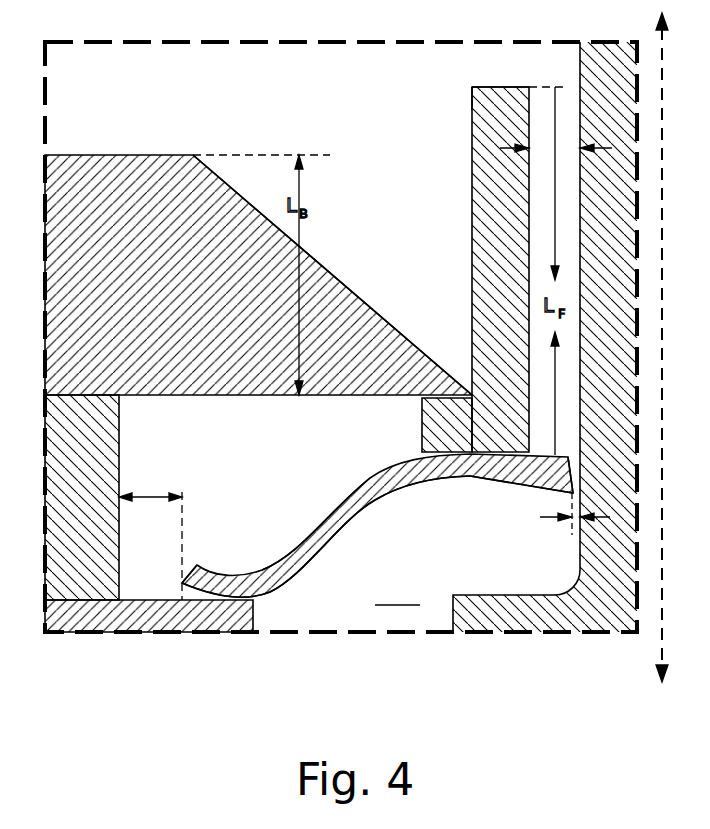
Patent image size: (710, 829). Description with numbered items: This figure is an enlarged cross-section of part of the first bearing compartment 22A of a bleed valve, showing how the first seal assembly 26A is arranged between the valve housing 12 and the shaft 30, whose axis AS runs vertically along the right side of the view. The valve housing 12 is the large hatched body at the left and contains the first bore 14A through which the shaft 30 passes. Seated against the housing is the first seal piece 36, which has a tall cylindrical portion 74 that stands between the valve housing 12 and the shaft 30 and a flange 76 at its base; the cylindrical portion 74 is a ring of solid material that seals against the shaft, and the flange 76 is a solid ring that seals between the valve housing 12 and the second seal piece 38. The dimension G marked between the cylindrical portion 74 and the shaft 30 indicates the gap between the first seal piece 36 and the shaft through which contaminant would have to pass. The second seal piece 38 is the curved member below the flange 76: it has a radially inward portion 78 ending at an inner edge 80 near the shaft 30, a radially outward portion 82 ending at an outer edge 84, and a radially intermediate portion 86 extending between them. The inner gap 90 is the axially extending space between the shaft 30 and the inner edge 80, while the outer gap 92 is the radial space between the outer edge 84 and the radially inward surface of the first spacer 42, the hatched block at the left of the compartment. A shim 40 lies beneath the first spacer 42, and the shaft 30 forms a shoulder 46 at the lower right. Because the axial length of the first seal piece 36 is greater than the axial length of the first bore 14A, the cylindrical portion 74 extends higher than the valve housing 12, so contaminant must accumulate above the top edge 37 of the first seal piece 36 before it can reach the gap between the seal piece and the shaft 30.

The valve housing 12 is at (113, 155).
The first bore 14A is at (348, 290).
The first bearing compartment 22A is at (397, 597).
The first seal assembly 26A is at (337, 486).
The shaft 30 is at (580, 60).
The first seal piece 36 is at (473, 190).
The top edge 37 is at (478, 87).
The second seal piece 38 is at (293, 555).
The shim 40 is at (253, 617).
The first spacer 42 is at (119, 448).
The shoulder 46 is at (500, 595).
The cylindrical portion 74 is at (472, 108).
The flange 76 is at (422, 415).
The radially inward portion 78 is at (480, 493).
The inner edge 80 is at (560, 490).
The radially outward portion 82 is at (235, 575).
The outer edge 84 is at (182, 580).
The radially intermediate portion 86 is at (350, 525).
The inner gap 90 is at (570, 518).
The outer gap 92 is at (152, 492).
The gap G is at (472, 130).
The axis AS is at (660, 636).